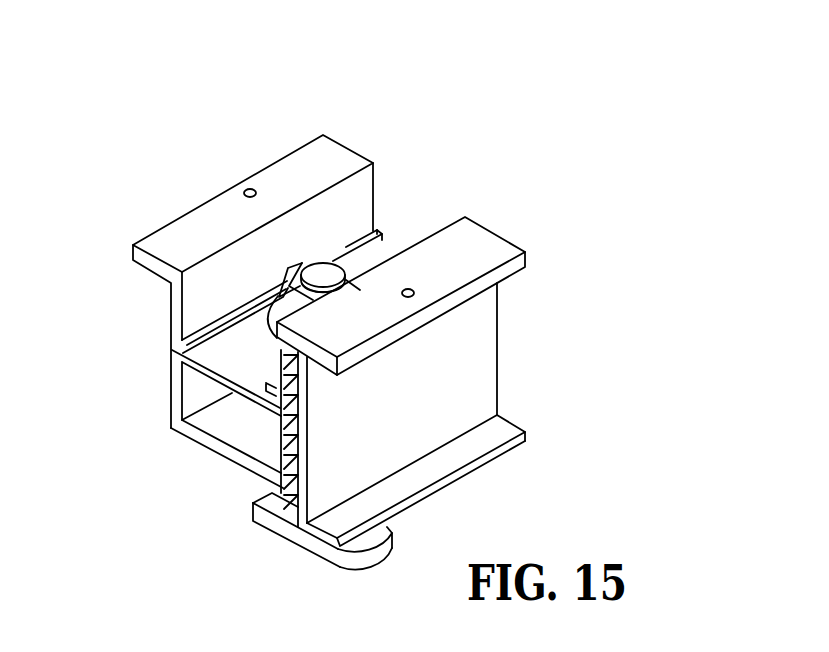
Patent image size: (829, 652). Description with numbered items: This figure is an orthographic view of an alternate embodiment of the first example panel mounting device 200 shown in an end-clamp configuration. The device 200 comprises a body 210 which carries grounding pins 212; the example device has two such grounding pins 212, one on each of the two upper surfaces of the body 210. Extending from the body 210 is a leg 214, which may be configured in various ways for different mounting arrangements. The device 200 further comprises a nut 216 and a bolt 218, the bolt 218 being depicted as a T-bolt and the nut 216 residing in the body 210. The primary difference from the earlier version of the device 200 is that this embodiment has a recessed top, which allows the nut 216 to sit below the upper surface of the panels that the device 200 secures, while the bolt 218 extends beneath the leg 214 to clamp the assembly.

The panel mounting device 200 is at (443, 104).
The body 210 is at (167, 222).
The grounding pins 212 is at (250, 189).
The leg 214 is at (510, 420).
The nut 216 is at (300, 262).
The bolt 218 is at (265, 525).